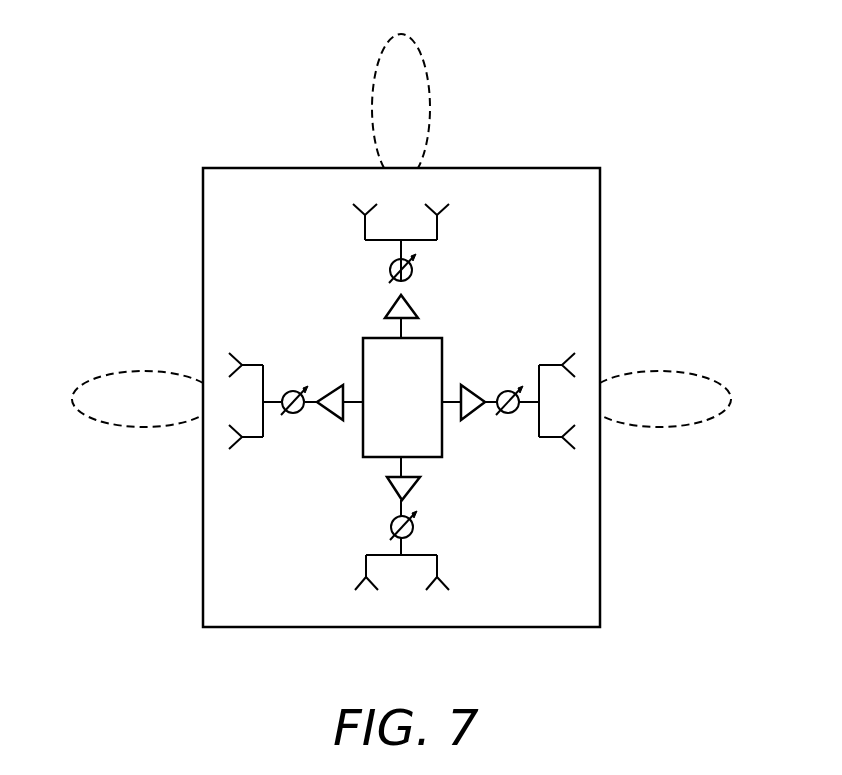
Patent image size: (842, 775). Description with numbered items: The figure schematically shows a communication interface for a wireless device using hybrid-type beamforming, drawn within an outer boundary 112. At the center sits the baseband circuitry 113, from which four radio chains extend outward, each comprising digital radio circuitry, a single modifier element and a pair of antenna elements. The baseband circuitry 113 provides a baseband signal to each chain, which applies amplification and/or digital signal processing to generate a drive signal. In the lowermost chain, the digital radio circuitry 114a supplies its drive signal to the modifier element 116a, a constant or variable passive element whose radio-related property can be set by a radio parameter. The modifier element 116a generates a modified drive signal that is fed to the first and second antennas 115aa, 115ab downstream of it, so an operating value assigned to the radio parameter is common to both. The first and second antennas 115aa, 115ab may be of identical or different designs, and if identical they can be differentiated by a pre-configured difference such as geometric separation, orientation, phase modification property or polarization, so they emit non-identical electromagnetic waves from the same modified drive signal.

The antenna module substrate / housing 112 is at (235, 627).
The baseband circuitry 113 is at (402, 397).
The lowermost digital radio circuitry 114a is at (387, 489).
The modifier element 116a is at (413, 525).
The first antenna 115aa is at (362, 588).
The second antenna 115ab is at (441, 588).